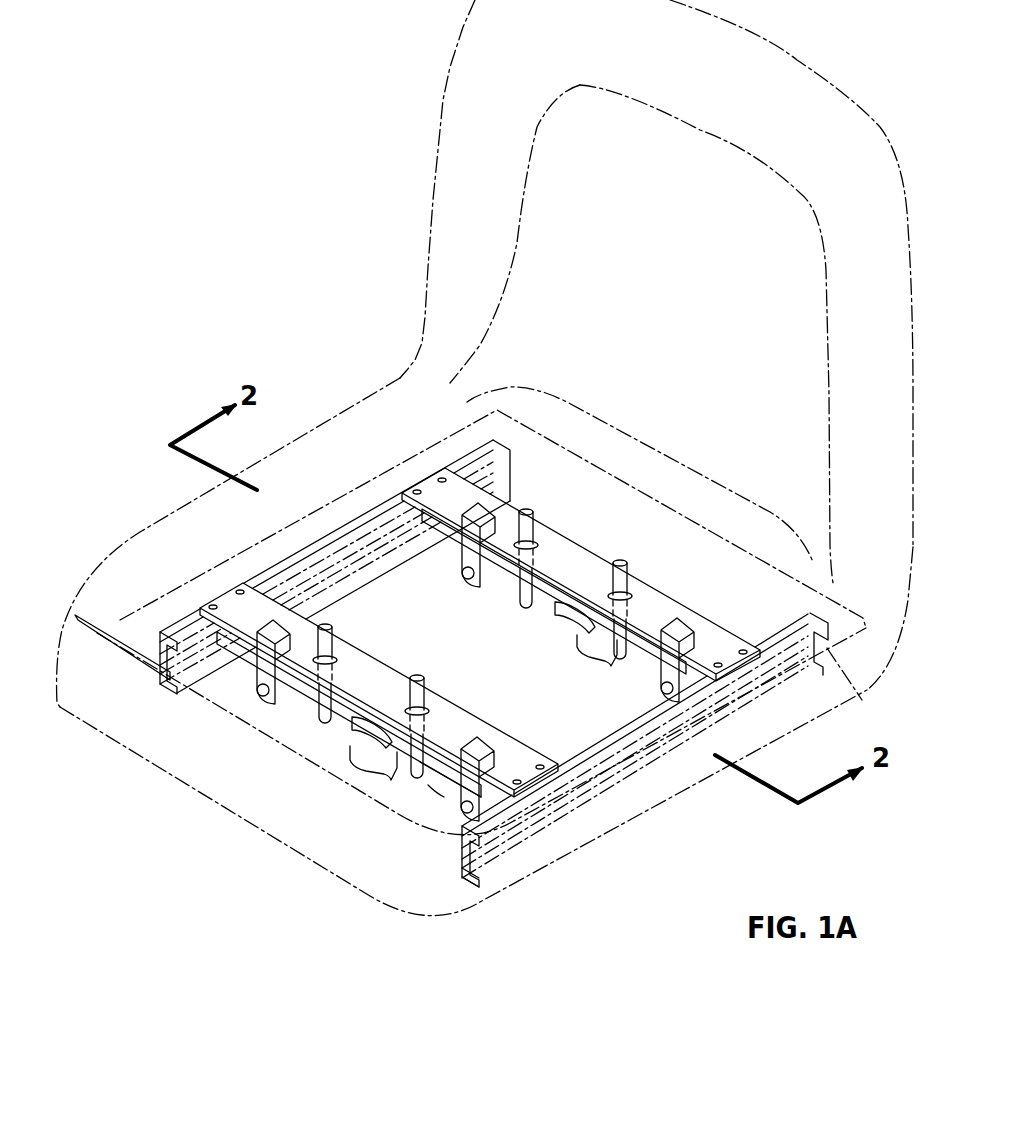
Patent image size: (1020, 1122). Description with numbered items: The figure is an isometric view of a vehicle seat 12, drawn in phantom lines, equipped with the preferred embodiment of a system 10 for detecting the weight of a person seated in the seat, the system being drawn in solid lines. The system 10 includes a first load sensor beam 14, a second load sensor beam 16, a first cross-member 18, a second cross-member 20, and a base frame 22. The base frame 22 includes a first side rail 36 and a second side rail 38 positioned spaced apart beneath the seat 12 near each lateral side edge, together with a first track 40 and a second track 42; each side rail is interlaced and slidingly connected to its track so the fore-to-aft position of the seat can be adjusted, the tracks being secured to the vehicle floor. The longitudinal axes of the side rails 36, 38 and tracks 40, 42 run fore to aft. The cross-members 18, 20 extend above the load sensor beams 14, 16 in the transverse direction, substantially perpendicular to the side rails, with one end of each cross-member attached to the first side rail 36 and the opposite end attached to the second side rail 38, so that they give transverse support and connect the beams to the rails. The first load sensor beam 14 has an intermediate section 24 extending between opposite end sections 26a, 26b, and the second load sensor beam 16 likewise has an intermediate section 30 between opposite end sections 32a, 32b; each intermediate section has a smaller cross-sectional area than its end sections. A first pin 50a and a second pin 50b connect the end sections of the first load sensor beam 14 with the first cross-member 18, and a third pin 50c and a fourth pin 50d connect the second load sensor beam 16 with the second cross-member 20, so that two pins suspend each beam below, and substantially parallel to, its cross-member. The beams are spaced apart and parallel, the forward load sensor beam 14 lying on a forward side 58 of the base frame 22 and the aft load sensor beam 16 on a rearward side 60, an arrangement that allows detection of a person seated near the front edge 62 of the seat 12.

The system 10 is at (322, 365).
The vehicle seat 12 is at (140, 508).
The first load sensor beam 14 is at (445, 795).
The second load sensor beam 16 is at (548, 627).
The first cross-member 18 is at (390, 680).
The second cross-member 20 is at (673, 607).
The base frame 22 is at (492, 448).
The intermediate section 24 is at (368, 748).
The end section 26a is at (297, 710).
The end section 26b is at (433, 790).
The intermediate section 30 is at (575, 635).
The end section 32a is at (500, 598).
The end section 32b is at (612, 663).
The first side rail 36 is at (180, 625).
The second side rail 38 is at (505, 837).
The first track 40 is at (157, 690).
The second track 42 is at (468, 867).
The first pin 50a is at (253, 673).
The second pin 50b is at (490, 810).
The third pin 50c is at (463, 557).
The fourth pin 50d is at (645, 676).
The forward side 58 is at (260, 817).
The rearward side 60 is at (592, 487).
The front edge 62 is at (100, 730).